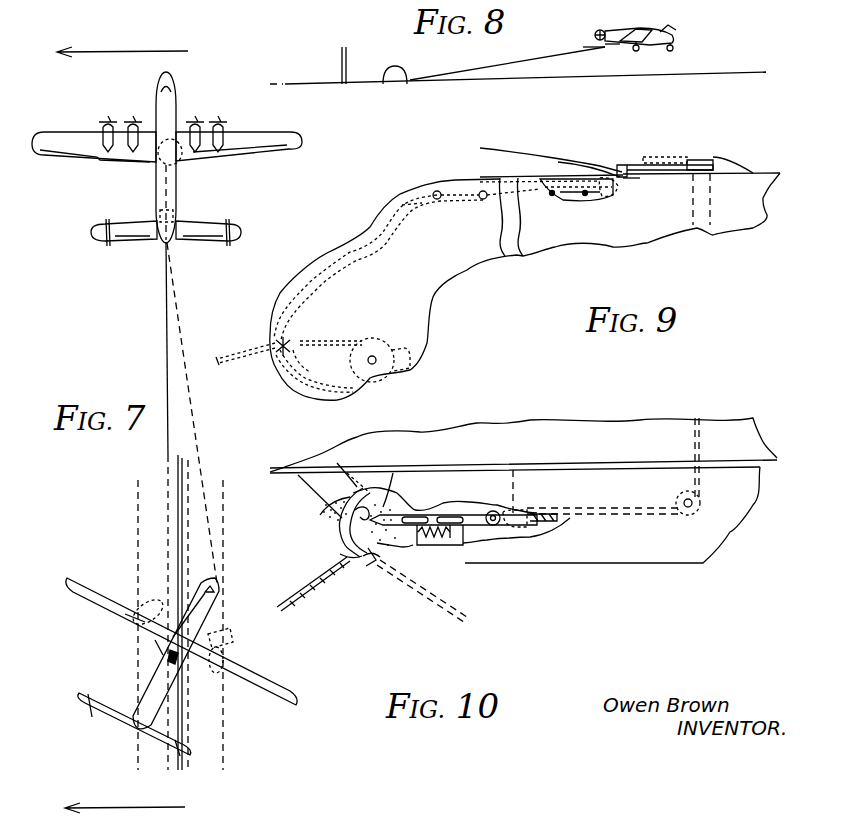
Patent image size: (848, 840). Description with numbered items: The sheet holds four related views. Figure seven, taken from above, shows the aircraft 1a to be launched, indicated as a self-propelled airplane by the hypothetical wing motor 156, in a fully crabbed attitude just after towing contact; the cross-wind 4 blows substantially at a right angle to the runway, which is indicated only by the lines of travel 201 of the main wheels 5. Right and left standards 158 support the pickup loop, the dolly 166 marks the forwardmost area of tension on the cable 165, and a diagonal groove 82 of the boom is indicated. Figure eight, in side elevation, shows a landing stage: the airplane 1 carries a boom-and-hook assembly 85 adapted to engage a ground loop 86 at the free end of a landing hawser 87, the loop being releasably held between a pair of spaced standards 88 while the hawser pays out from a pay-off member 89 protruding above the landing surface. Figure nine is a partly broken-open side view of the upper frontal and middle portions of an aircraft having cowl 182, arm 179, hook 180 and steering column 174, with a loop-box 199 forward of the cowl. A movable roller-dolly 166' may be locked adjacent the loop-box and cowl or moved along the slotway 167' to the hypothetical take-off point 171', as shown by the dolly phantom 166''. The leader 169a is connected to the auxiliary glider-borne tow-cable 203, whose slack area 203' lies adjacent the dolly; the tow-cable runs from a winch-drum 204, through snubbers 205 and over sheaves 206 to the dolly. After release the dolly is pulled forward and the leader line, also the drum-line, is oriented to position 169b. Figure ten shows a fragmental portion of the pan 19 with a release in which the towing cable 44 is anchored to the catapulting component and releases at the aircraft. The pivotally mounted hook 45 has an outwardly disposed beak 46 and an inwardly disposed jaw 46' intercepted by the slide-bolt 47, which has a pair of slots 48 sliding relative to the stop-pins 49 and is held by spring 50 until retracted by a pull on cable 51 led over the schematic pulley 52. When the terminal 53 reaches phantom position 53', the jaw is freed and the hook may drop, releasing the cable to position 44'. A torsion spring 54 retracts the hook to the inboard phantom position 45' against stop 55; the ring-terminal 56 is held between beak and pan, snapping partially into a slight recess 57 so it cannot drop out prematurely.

In FIG. 7, the cross-wind 4 is at (147, 50).
In FIG. 7, the dolly 166 is at (195, 163).
In FIG. 7, the cable 165 is at (166, 357).
In FIG. 7, the lines of travel 201 is at (137, 545).
In FIG. 7, the aircraft 1a is at (214, 622).
In FIG. 7, the diagonal groove 82 is at (194, 678).
In FIG. 7, the wing motor 156 is at (157, 603).
In FIG. 7, the main wheels 5 is at (130, 620).
In FIG. 7, the standards 158 is at (160, 648).
In FIG. 8, the standards 88 is at (347, 50).
In FIG. 8, the pay-off member 89 is at (383, 84).
In FIG. 8, the landing hawser 87 is at (508, 62).
In FIG. 8, the airplane 1 is at (662, 32).
In FIG. 8, the ground loop 86 is at (585, 47).
In FIG. 8, the boom-and-hook assembly 85 is at (612, 45).
In FIG. 9, the leader line 169a is at (520, 152).
In FIG. 9, the slack-line area of tow-cable 203' is at (589, 155).
In FIG. 9, the hook 180 is at (623, 164).
In FIG. 9, the arm 179 is at (677, 157).
In FIG. 9, the cowl 182 is at (733, 163).
In FIG. 9, the loop-box 199 is at (622, 182).
In FIG. 9, the steering column 174 is at (713, 203).
In FIG. 9, the slotway 167' is at (576, 208).
In FIG. 9, the roller-dolly 166' is at (634, 206).
In FIG. 9, the dolly phantom position 166'' is at (407, 290).
In FIG. 9, the sheaves 206 is at (412, 207).
In FIG. 9, the winch-drum 204 is at (407, 350).
In FIG. 9, the tow-cable 203 is at (352, 326).
In FIG. 9, the snubbers 205 is at (300, 357).
In FIG. 9, the leader line position 169b is at (240, 352).
In FIG. 9, the take-off point 171' is at (261, 369).
In FIG. 10, the pan 19 is at (703, 533).
In FIG. 10, the slide-bolt 47 is at (433, 515).
In FIG. 10, the slots 48 is at (453, 517).
In FIG. 10, the terminal 53 is at (495, 478).
In FIG. 10, the cable 51 is at (518, 510).
In FIG. 10, the pulley 52 is at (675, 502).
In FIG. 10, the phantom position of terminal 53' is at (611, 460).
In FIG. 10, the spring 50 is at (440, 540).
In FIG. 10, the stop-pins 49 is at (463, 545).
In FIG. 10, the hook 45 is at (329, 522).
In FIG. 10, the inboard phantom position of hook 45' is at (316, 460).
In FIG. 10, the stop 55 is at (347, 473).
In FIG. 10, the jaw 46' is at (374, 480).
In FIG. 10, the torsion spring 54 is at (350, 497).
In FIG. 10, the ring-terminal 56 is at (340, 554).
In FIG. 10, the beak 46 is at (356, 580).
In FIG. 10, the recess 57 is at (365, 560).
In FIG. 10, the towing cable 44 is at (313, 597).
In FIG. 10, the released position of towing cable 44' is at (422, 599).